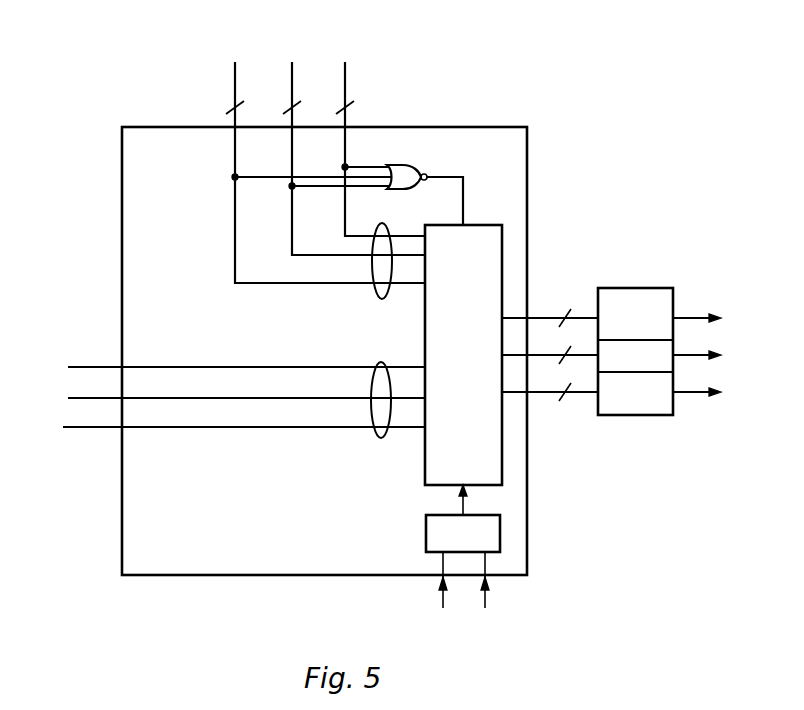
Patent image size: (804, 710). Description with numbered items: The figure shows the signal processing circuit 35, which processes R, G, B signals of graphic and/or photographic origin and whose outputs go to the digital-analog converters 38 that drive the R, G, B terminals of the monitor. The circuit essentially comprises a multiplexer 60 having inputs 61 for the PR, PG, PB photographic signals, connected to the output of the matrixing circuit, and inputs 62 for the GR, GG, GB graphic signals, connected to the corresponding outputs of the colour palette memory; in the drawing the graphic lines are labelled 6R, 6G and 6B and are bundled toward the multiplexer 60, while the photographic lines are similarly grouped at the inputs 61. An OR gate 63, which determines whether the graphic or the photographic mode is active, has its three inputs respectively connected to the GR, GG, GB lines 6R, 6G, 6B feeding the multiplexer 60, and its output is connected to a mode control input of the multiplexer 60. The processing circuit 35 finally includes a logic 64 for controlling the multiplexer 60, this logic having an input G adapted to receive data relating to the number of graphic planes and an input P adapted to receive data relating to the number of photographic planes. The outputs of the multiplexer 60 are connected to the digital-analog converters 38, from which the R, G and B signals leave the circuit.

The signal processing circuit 35 is at (289, 523).
The digital-analog converters 38 is at (650, 332).
The multiplexer 60 is at (478, 353).
The inputs of photographic signals 61 is at (380, 448).
The inputs of graphic signals 62 is at (370, 304).
The OR gate 63 is at (408, 164).
The logic for controlling the multiplexer 64 is at (496, 529).
The red graphics data bus 6R is at (323, 162).
The green graphics data bus 6G is at (352, 148).
The blue graphics data bus 6B is at (379, 138).